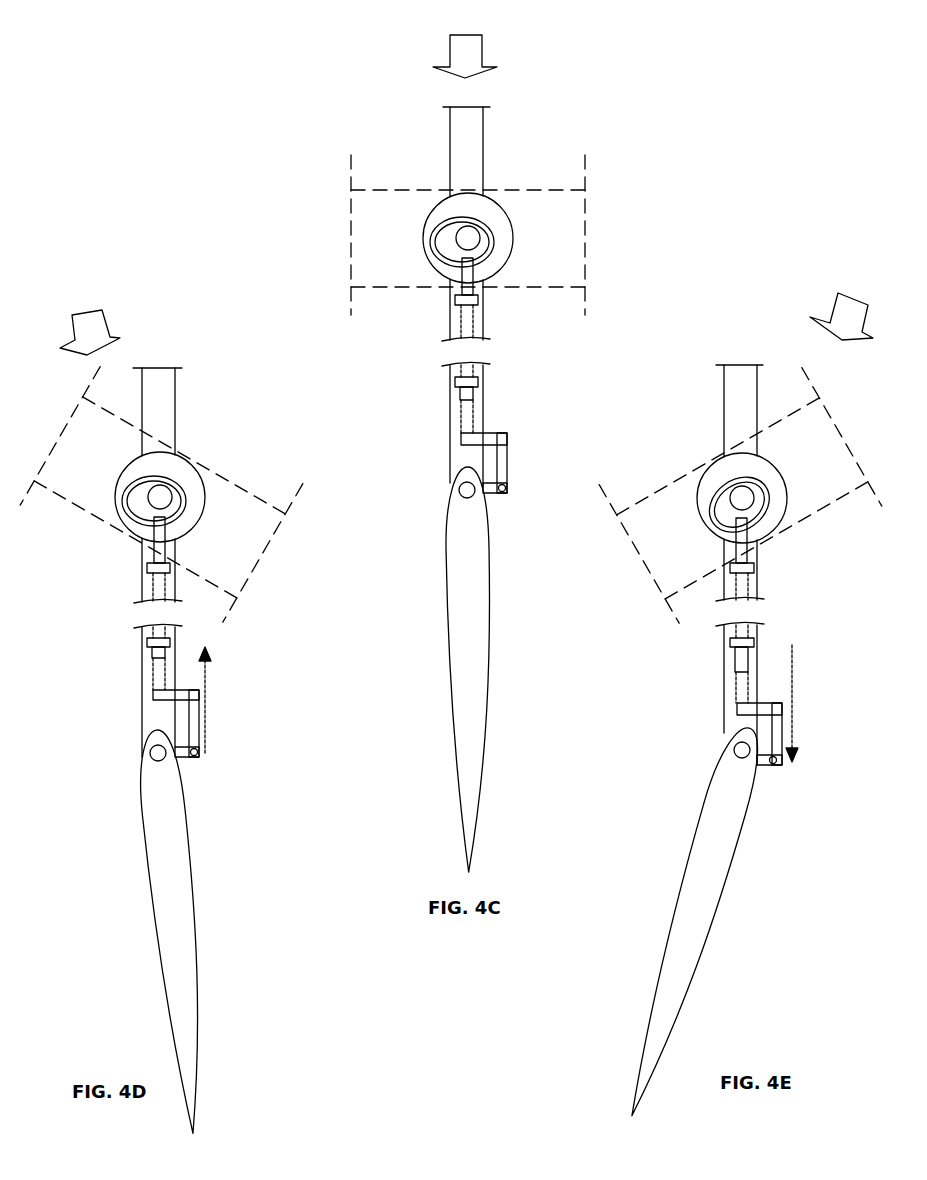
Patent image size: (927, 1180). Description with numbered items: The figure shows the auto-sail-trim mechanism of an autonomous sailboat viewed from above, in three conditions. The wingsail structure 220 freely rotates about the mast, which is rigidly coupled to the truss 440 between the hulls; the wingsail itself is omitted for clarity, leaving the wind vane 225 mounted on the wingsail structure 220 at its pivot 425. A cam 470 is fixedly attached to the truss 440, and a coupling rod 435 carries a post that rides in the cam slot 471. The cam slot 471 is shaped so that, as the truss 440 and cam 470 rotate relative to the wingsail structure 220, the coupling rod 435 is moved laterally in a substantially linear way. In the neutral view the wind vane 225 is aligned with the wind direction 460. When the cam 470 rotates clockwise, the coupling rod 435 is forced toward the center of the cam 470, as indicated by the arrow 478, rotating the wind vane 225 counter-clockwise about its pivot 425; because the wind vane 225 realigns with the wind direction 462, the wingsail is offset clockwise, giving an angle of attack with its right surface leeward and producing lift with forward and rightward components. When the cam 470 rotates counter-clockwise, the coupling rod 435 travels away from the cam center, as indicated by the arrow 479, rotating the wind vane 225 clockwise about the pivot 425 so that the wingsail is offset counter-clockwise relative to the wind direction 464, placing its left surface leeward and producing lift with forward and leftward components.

In FIG. 4C, the wingsail structure 220 is at (467, 162).
In FIG. 4D, the wingsail structure 220 is at (157, 562).
In FIG. 4E, the wingsail structure 220 is at (737, 402).
In FIG. 4C, the wind vane 225 is at (458, 517).
In FIG. 4D, the wind vane 225 is at (165, 792).
In FIG. 4E, the wind vane 225 is at (728, 782).
In FIG. 4C, the pivot 425 is at (458, 485).
In FIG. 4D, the pivot 425 is at (150, 747).
In FIG. 4E, the pivot 425 is at (730, 748).
In FIG. 4C, the coupling rod 435 is at (514, 375).
In FIG. 4D, the coupling rod 435 is at (158, 587).
In FIG. 4E, the coupling rod 435 is at (742, 582).
In FIG. 4C, the truss 440 is at (525, 247).
In FIG. 4D, the truss 440 is at (253, 532).
In FIG. 4E, the truss 440 is at (678, 500).
In FIG. 4C, the wind direction 460 is at (473, 60).
In FIG. 4D, the wind direction 462 is at (95, 335).
In FIG. 4E, the wind direction 464 is at (842, 312).
In FIG. 4C, the cam 470 is at (482, 203).
In FIG. 4D, the cam 470 is at (182, 473).
In FIG. 4E, the cam 470 is at (710, 473).
In FIG. 4C, the cam slot 471 is at (428, 263).
In FIG. 4D, the cam slot 471 is at (183, 510).
In FIG. 4E, the cam slot 471 is at (723, 538).
In FIG. 4D, the arrow 478 is at (208, 698).
In FIG. 4E, the arrow 479 is at (793, 705).